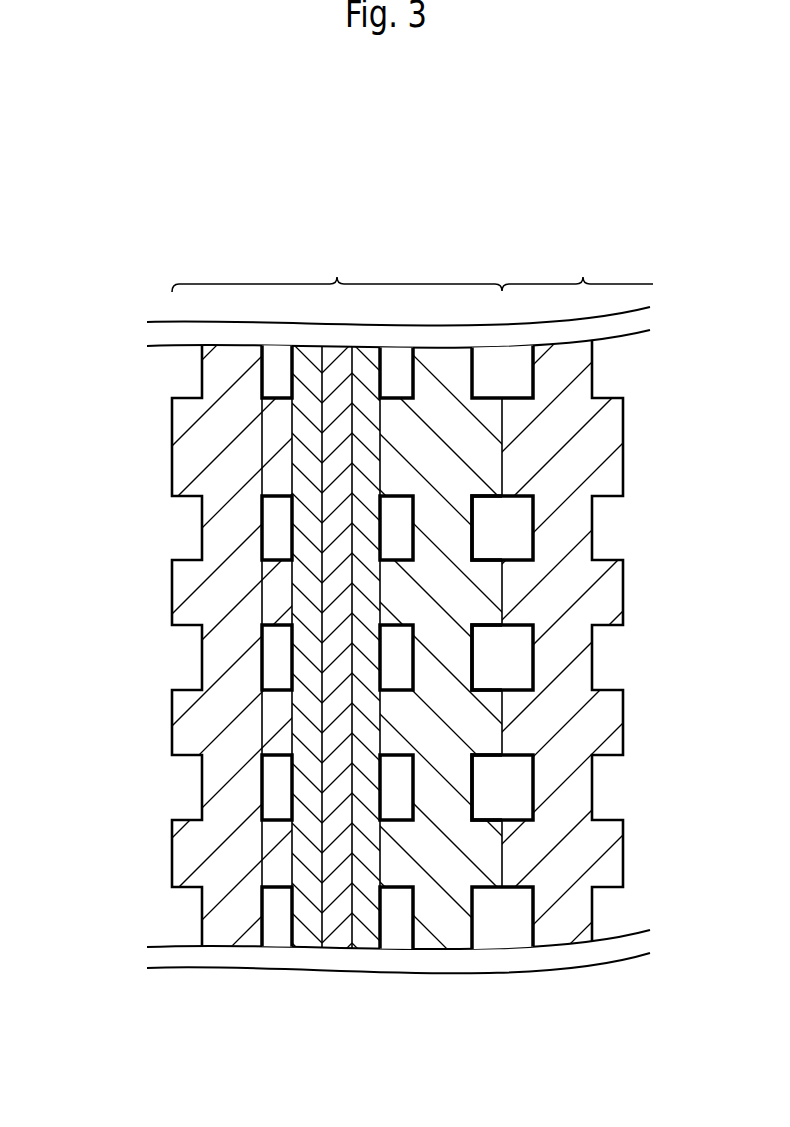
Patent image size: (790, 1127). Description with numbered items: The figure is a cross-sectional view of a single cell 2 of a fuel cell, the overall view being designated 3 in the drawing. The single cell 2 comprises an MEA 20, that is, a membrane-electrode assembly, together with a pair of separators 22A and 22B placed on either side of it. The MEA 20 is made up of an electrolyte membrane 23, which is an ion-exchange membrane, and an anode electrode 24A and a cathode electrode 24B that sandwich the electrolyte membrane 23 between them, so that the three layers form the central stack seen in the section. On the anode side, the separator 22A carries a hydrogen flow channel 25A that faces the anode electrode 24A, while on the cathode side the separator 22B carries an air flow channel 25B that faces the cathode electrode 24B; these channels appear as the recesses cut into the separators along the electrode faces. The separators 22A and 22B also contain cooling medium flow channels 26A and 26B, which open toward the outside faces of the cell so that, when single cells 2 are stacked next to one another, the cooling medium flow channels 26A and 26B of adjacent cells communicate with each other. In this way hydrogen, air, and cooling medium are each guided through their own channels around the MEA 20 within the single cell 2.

The fuel cell stack 3 is at (122, 230).
The single cell 2 is at (412, 270).
The MEA 20 is at (340, 704).
The electrolyte membrane 23 is at (333, 935).
The anode electrode 24A is at (305, 930).
The cathode electrode 24B is at (382, 690).
The separator 22A is at (238, 928).
The separator 22B is at (447, 933).
The hydrogen flow channel 25A is at (278, 519).
The air flow channel 25B is at (400, 527).
The cooling medium flow channel 26A is at (533, 673).
The cooling medium flow channel 26B is at (472, 667).